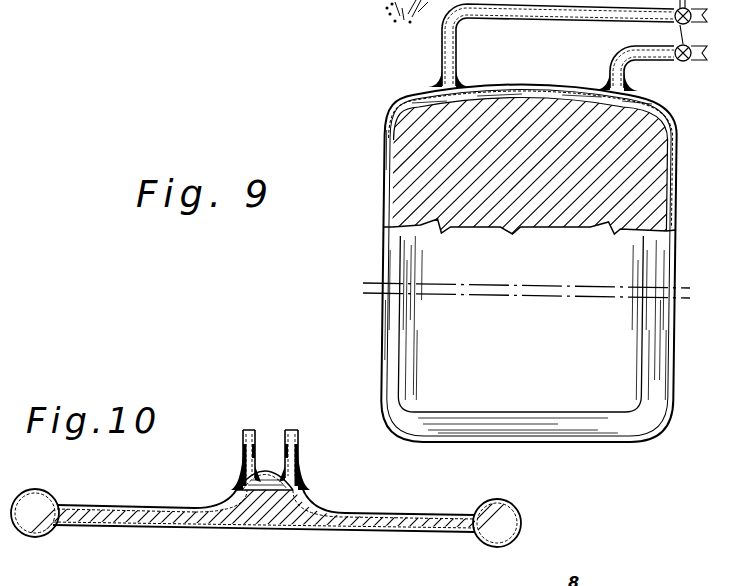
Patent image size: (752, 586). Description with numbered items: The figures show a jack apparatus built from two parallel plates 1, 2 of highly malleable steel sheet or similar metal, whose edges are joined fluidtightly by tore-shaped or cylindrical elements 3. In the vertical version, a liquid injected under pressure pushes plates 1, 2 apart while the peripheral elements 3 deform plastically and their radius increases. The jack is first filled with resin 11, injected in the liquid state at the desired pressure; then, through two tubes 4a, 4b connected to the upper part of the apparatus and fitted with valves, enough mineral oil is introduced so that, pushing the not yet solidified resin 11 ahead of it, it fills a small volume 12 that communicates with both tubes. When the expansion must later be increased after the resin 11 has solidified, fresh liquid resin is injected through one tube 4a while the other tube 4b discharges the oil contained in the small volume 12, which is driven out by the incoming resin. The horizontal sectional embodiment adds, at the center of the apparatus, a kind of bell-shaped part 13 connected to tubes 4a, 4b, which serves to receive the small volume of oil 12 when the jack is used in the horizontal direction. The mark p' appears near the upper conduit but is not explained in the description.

In FIG. 9, the plate 1 is at (427, 377).
In FIG. 10, the plate 1 is at (121, 508).
In FIG. 10, the plate 2 is at (134, 523).
In FIG. 9, the tore-shaped or cylindrical element 3 is at (682, 340).
In FIG. 10, the tore-shaped or cylindrical element 3 is at (33, 497).
In FIG. 9, the tube 4a is at (486, 19).
In FIG. 10, the tube 4a is at (244, 453).
In FIG. 9, the tube 4b is at (611, 60).
In FIG. 10, the tube 4b is at (308, 447).
In FIG. 9, the resin 11 is at (660, 139).
In FIG. 10, the resin 11 is at (259, 519).
In FIG. 9, the small volume of oil 12 is at (641, 96).
In FIG. 10, the small volume of oil 12 is at (237, 489).
In FIG. 10, the bell-shaped part 13 is at (303, 490).
In FIG. 9, the pressure spray p' is at (407, 23).